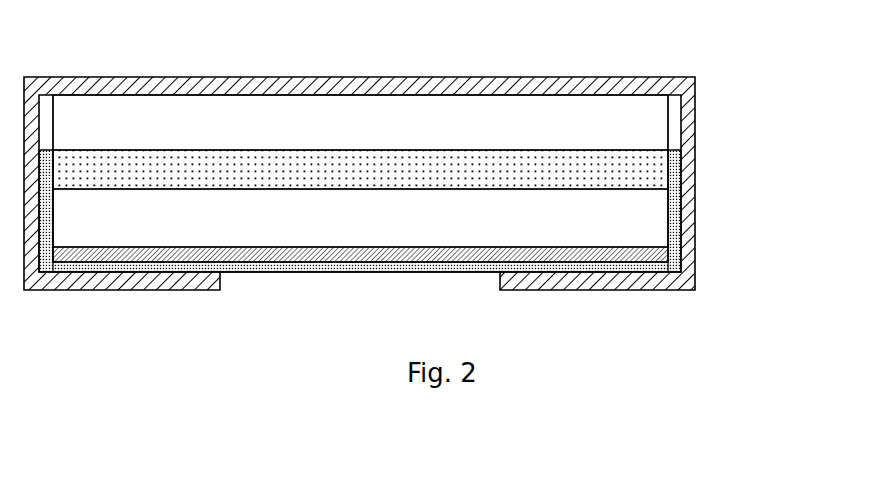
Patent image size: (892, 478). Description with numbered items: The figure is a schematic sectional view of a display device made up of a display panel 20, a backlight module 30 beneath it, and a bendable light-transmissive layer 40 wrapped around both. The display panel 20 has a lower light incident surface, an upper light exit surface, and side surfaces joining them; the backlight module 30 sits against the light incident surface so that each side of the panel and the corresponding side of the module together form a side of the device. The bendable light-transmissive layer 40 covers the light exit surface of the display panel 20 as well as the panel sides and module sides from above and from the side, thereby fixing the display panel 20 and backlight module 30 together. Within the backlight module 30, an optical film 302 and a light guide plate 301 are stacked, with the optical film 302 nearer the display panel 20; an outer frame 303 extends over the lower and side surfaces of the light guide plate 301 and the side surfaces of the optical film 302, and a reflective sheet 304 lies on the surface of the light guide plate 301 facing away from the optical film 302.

The bendable light-transmissive layer 40 is at (612, 77).
The display panel 20 is at (623, 122).
The backlight module 30 is at (790, 288).
The light guide plate 301 is at (611, 218).
The optical film 302 is at (611, 172).
The outer frame 303 is at (673, 265).
The reflective sheet 304 is at (612, 255).